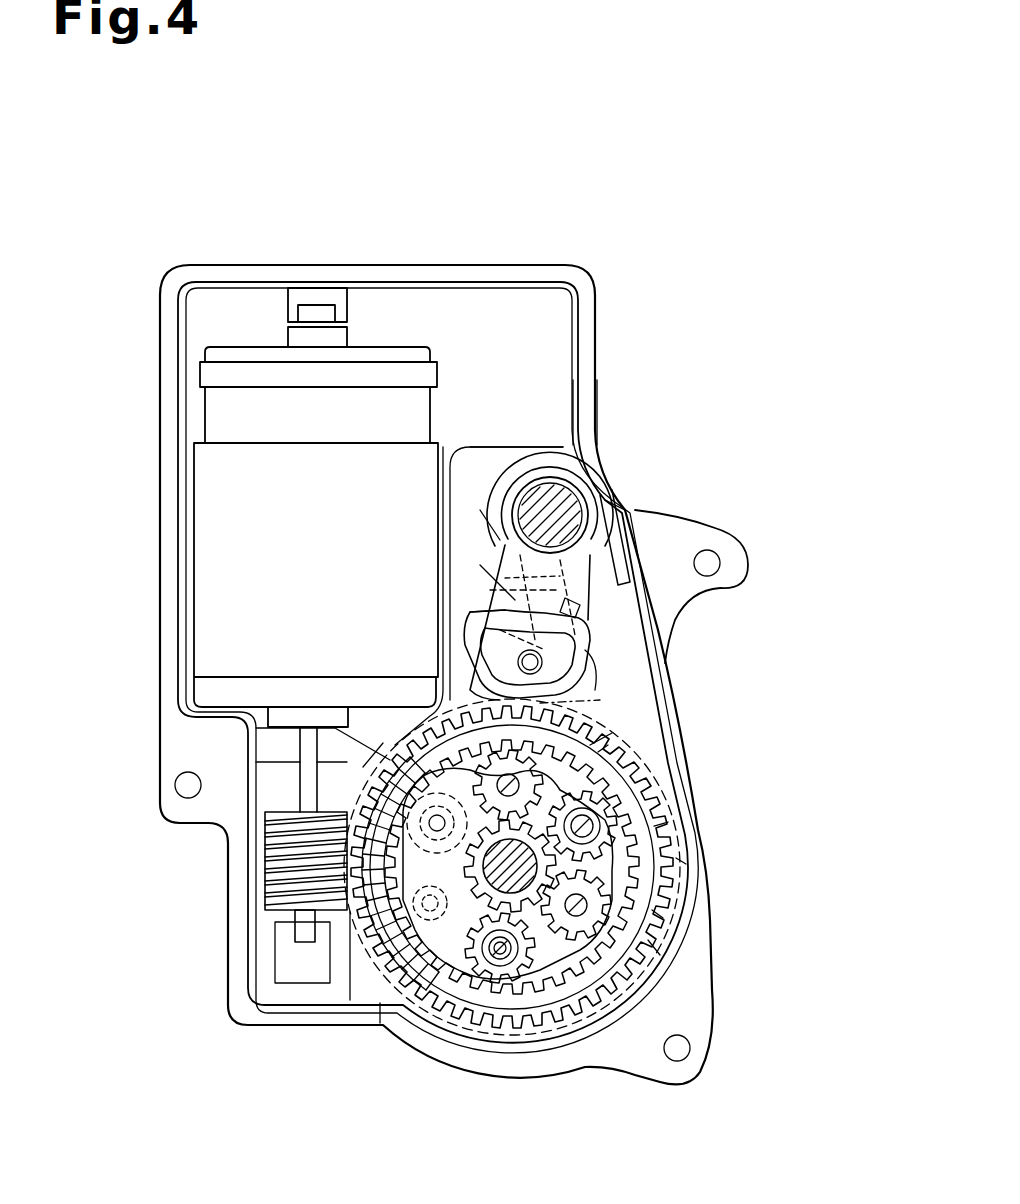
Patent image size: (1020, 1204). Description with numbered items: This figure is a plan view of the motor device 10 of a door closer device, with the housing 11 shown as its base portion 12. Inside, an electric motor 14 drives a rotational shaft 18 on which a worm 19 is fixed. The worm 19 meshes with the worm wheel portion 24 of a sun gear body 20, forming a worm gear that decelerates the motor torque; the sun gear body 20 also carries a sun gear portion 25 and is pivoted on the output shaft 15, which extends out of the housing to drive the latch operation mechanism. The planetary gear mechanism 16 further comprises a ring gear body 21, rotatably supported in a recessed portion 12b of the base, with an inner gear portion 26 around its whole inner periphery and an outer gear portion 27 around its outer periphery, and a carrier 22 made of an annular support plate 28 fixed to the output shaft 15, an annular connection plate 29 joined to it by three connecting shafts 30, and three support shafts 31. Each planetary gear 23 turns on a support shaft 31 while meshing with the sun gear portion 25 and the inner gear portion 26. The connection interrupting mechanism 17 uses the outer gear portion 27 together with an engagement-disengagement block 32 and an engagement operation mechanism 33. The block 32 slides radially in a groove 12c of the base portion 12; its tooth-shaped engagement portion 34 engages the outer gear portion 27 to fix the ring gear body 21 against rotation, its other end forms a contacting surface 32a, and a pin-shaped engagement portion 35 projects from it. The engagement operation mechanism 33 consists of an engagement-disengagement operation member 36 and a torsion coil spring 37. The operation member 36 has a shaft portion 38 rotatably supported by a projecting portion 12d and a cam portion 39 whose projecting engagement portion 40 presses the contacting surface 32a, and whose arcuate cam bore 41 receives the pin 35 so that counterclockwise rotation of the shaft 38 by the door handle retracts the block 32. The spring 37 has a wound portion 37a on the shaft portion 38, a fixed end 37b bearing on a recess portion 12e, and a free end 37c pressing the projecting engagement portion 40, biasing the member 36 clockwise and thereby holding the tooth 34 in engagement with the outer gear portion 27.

The motor device 10 is at (668, 226).
The housing 11 is at (282, 246).
The base portion 12 is at (378, 262).
The recessed portion 12b is at (593, 1027).
The groove 12c is at (490, 608).
The projecting portion 12d is at (523, 447).
The recess portion 12e is at (700, 585).
The electric motor 14 is at (210, 483).
The output shaft 15 is at (524, 848).
The planetary gear mechanism 16 is at (780, 758).
The connection interrupting mechanism 17 is at (705, 458).
The rotational shaft 18 is at (305, 745).
The worm 19 is at (270, 872).
The sun gear body 20 is at (385, 1020).
The ring gear body 21 is at (560, 1000).
The carrier 22 is at (467, 980).
The planetary gear 23 is at (657, 915).
The worm wheel portion 24 is at (357, 965).
The sun gear portion 25 is at (521, 952).
The inner gear portion 26 is at (660, 823).
The outer gear portion 27 is at (680, 860).
The annular support plate 28 is at (670, 893).
The annular connection plate 29 is at (403, 858).
The connecting shaft 30 is at (430, 823).
The support shaft 31 is at (605, 742).
The engagement-disengagement block 32 is at (475, 680).
The contacting surface 32a is at (505, 578).
The engagement operation mechanism 33 is at (464, 518).
The tooth-shaped engagement portion 34 is at (545, 705).
The pin-shaped engagement portion 35 is at (545, 662).
The engagement-disengagement operation member 36 is at (470, 556).
The torsion coil spring 37 is at (509, 474).
The wound portion 37a is at (596, 460).
The fixed end 37b is at (632, 520).
The free end 37c is at (625, 545).
The shaft portion 38 is at (585, 490).
The cam portion 39 is at (465, 625).
The projecting engagement portion 40 is at (578, 612).
The cam bore 41 is at (590, 670).